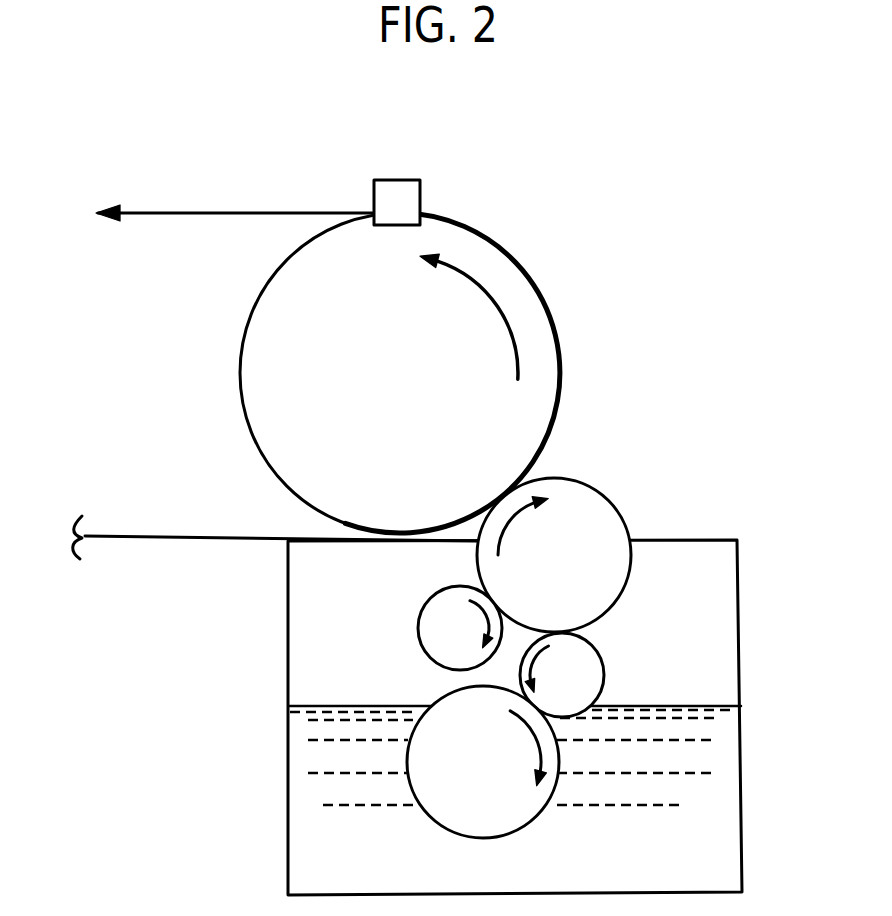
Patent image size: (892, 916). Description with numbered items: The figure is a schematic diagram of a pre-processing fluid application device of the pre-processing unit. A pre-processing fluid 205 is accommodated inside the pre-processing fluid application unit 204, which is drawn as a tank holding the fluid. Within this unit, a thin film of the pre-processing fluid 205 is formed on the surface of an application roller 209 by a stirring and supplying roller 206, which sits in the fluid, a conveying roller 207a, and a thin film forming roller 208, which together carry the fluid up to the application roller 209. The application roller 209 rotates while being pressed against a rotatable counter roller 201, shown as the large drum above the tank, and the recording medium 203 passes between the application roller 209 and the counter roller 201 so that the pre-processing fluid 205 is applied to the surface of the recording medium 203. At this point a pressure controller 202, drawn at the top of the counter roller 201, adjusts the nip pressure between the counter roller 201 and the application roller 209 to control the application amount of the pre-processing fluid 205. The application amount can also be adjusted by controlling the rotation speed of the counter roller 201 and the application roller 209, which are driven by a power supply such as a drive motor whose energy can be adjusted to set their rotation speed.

The counter roller 201 is at (240, 366).
The pressure controller 202 is at (396, 180).
The recording medium 203 is at (519, 258).
The pre-processing fluid application unit 204 is at (288, 851).
The pre-processing fluid 205 is at (739, 849).
The stirring and supplying roller 206 is at (530, 824).
The conveying roller 207a is at (605, 672).
The thin film forming roller 208 is at (418, 625).
The application roller 209 is at (627, 524).